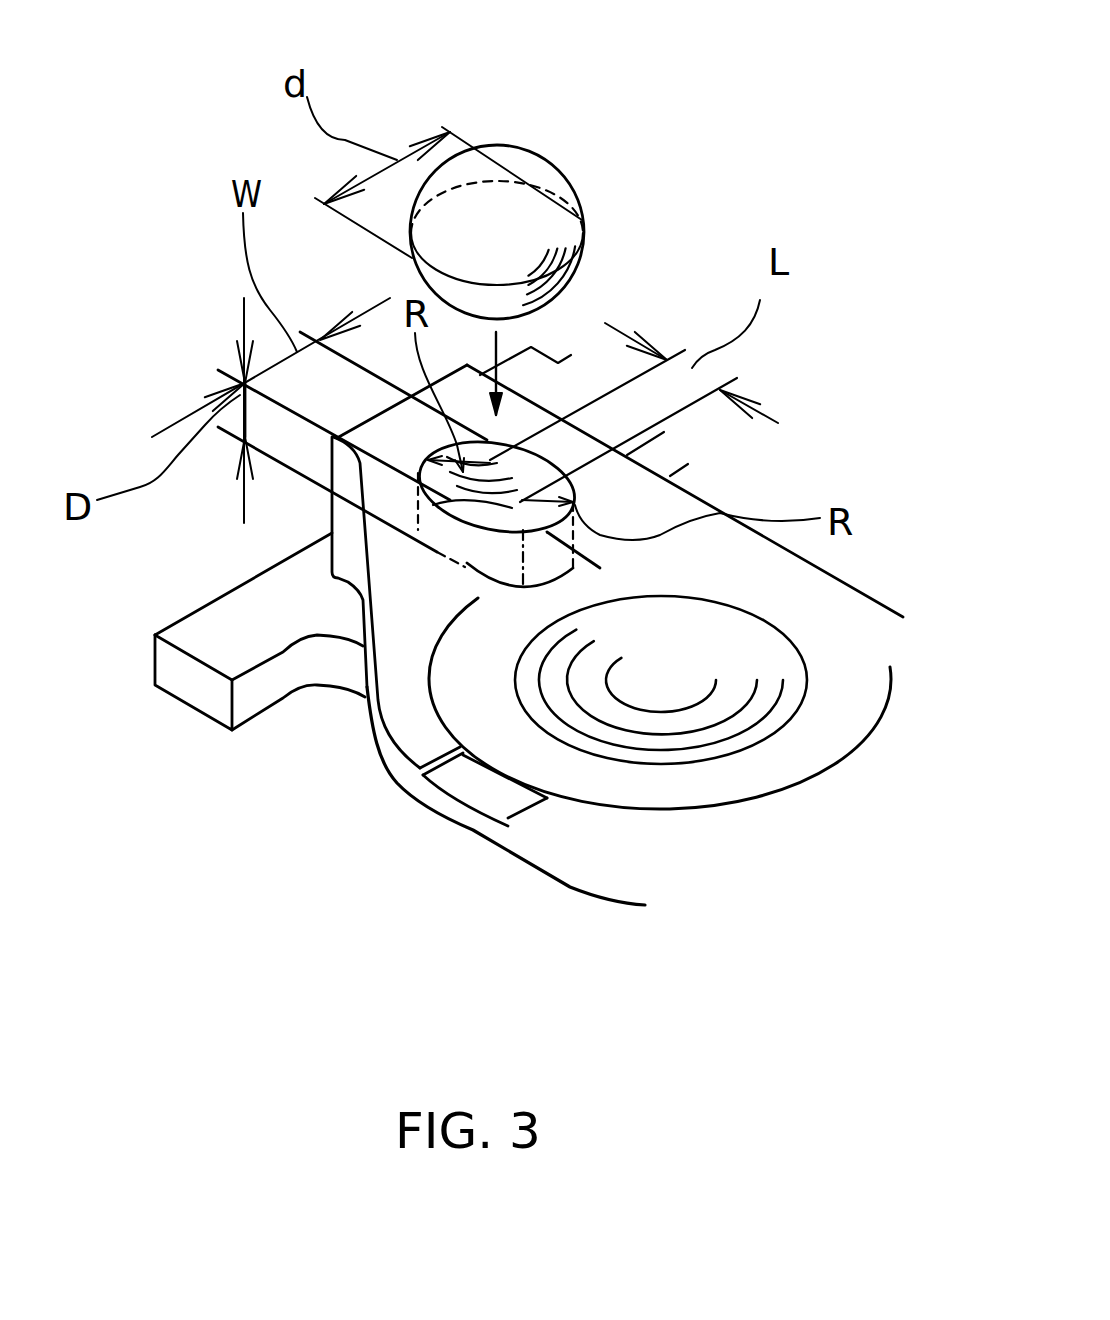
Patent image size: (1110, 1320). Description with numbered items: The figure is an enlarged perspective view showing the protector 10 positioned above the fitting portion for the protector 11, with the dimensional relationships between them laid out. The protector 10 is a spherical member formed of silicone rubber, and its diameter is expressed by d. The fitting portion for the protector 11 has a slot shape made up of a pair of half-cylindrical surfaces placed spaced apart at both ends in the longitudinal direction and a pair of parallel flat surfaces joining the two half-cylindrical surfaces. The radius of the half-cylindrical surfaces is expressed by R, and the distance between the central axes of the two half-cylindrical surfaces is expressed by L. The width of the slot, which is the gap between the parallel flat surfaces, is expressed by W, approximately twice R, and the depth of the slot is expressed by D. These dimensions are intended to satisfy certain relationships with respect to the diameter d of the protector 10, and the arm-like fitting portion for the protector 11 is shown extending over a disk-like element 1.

The disk 1 is at (640, 742).
The protector 10 is at (547, 160).
The fitting portion for the protector 11 is at (472, 517).